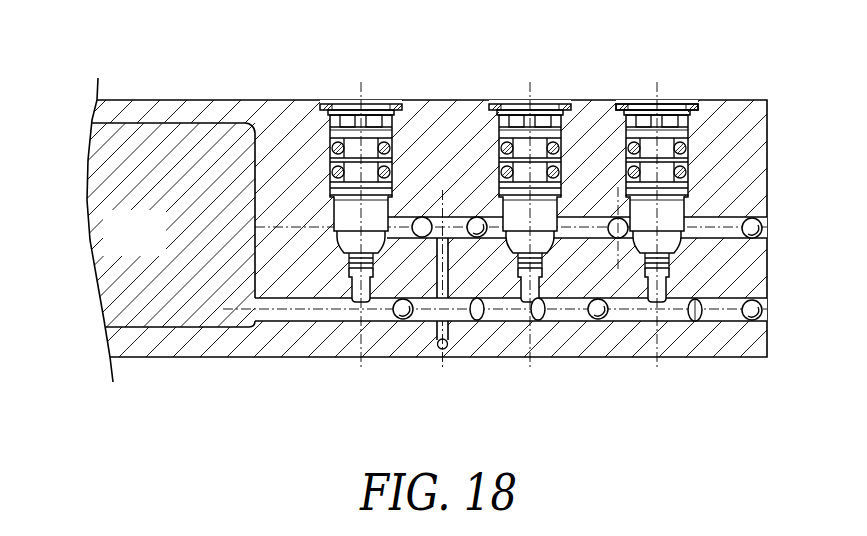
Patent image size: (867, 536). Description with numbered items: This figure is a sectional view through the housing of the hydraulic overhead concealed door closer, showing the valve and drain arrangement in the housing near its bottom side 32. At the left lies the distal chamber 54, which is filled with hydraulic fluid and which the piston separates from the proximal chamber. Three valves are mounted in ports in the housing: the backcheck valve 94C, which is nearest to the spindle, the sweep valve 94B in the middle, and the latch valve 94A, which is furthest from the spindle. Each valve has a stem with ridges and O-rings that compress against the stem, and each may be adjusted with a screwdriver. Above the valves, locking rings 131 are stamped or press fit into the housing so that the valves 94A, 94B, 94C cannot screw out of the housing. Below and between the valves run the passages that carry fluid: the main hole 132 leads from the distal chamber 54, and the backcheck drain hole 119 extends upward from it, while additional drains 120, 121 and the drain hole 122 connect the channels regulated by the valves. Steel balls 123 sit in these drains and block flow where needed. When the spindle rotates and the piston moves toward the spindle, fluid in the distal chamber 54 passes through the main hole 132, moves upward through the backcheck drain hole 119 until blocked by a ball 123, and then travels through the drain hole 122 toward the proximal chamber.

The bottom side 32 is at (202, 100).
The distal chamber 54 is at (100, 163).
The latch valve 94A is at (673, 108).
The sweep valve 94B is at (545, 107).
The backcheck valve 94C is at (350, 100).
The backcheck drain hole 119 is at (428, 218).
The drain 120 is at (705, 318).
The drain 121 is at (610, 218).
The drain hole 122 is at (538, 316).
The steel ball 123 is at (468, 217).
The locking ring 131 is at (692, 104).
The main hole 132 is at (253, 312).